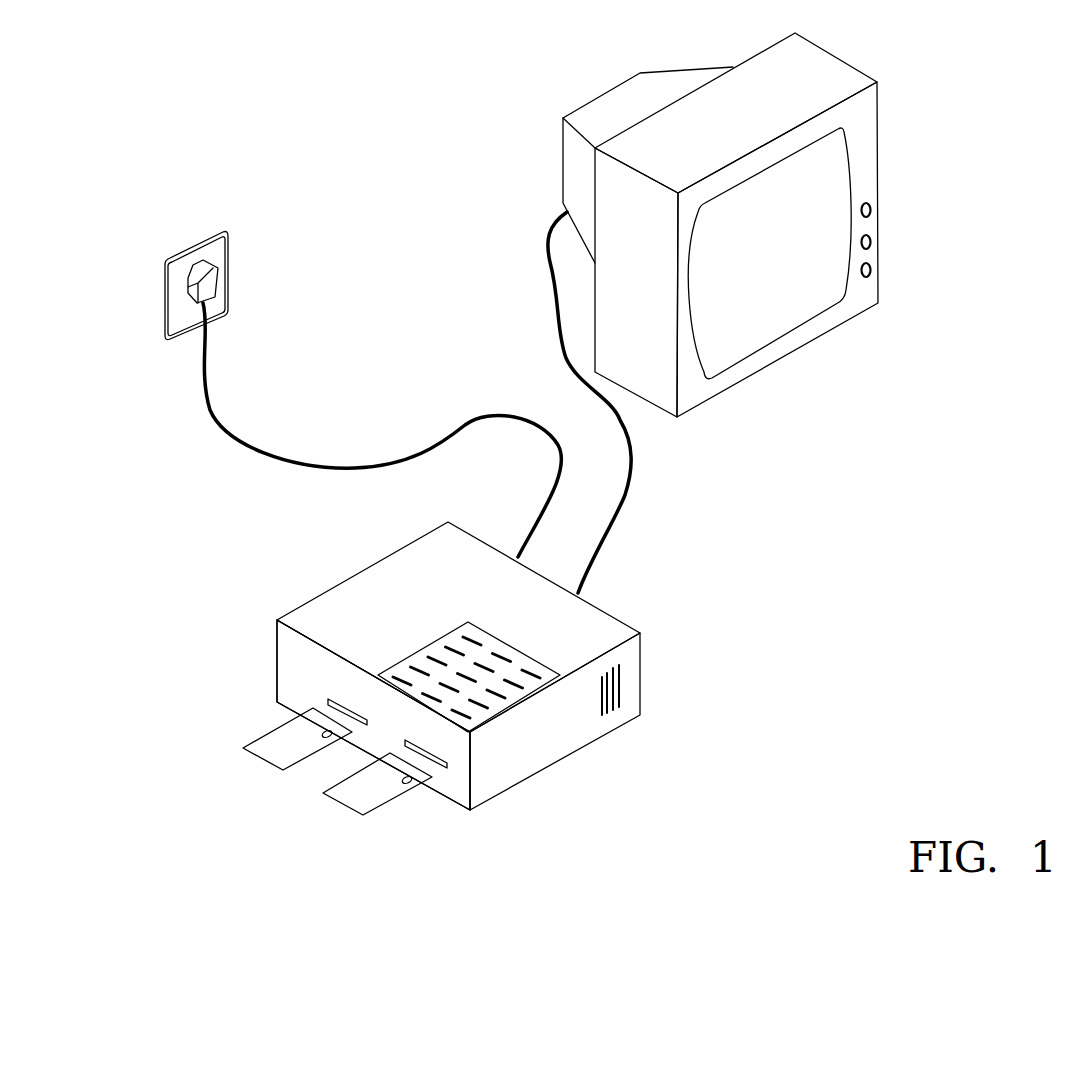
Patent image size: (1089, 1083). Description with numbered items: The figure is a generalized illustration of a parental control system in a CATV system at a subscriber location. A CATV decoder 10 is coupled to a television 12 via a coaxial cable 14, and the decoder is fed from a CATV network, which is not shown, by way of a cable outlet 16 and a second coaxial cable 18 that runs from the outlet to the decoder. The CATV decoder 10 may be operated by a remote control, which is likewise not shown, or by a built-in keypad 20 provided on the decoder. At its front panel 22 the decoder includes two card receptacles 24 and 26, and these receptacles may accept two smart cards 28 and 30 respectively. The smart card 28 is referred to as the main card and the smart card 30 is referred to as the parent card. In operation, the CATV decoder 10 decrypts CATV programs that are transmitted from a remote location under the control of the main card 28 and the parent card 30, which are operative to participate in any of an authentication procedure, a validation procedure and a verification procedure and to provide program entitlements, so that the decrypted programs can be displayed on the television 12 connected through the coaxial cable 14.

The CATV decoder 10 is at (563, 737).
The television 12 is at (862, 157).
The coaxial cable 14 is at (627, 502).
The cable outlet 16 is at (187, 322).
The coaxial cable 18 is at (287, 462).
The built-in keypad 20 is at (480, 715).
The front panel 22 is at (460, 797).
The card receptacle 24 is at (445, 768).
The card receptacle 26 is at (330, 702).
The smart card 28 is at (348, 797).
The smart card 30 is at (275, 760).